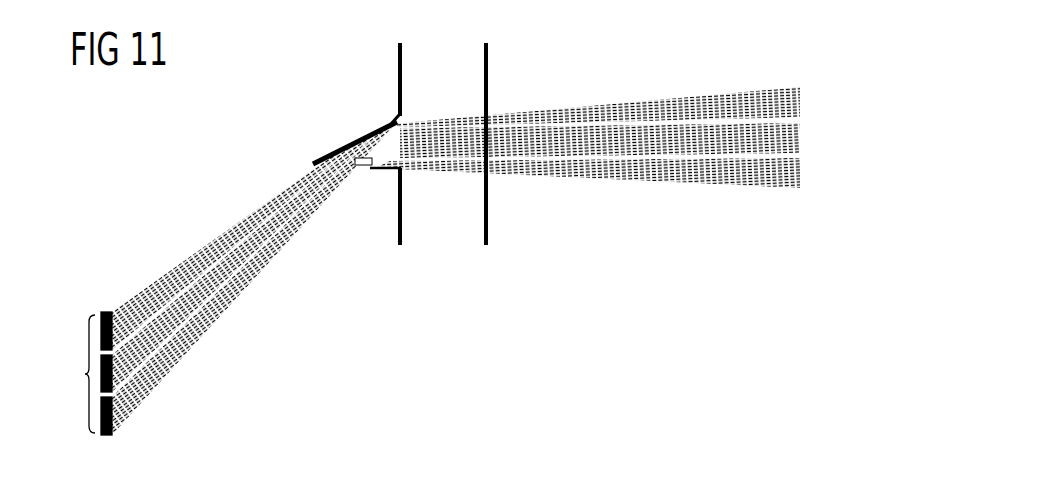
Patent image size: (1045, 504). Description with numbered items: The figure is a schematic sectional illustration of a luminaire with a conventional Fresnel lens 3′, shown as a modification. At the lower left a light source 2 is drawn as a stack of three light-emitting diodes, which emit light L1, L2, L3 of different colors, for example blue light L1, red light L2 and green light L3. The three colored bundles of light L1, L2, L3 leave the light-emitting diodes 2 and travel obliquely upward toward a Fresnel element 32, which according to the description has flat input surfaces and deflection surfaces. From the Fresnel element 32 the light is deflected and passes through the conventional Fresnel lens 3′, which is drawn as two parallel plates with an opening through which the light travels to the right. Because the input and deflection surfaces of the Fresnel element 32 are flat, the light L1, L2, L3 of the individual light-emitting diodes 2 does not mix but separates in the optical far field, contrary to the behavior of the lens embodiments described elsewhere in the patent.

The light source 2 is at (89, 373).
The Fresnel element 32 is at (345, 147).
The conventional Fresnel lens 3′ is at (438, 246).
The blue light L1 is at (152, 373).
The red light L2 is at (145, 327).
The green light L3 is at (172, 278).